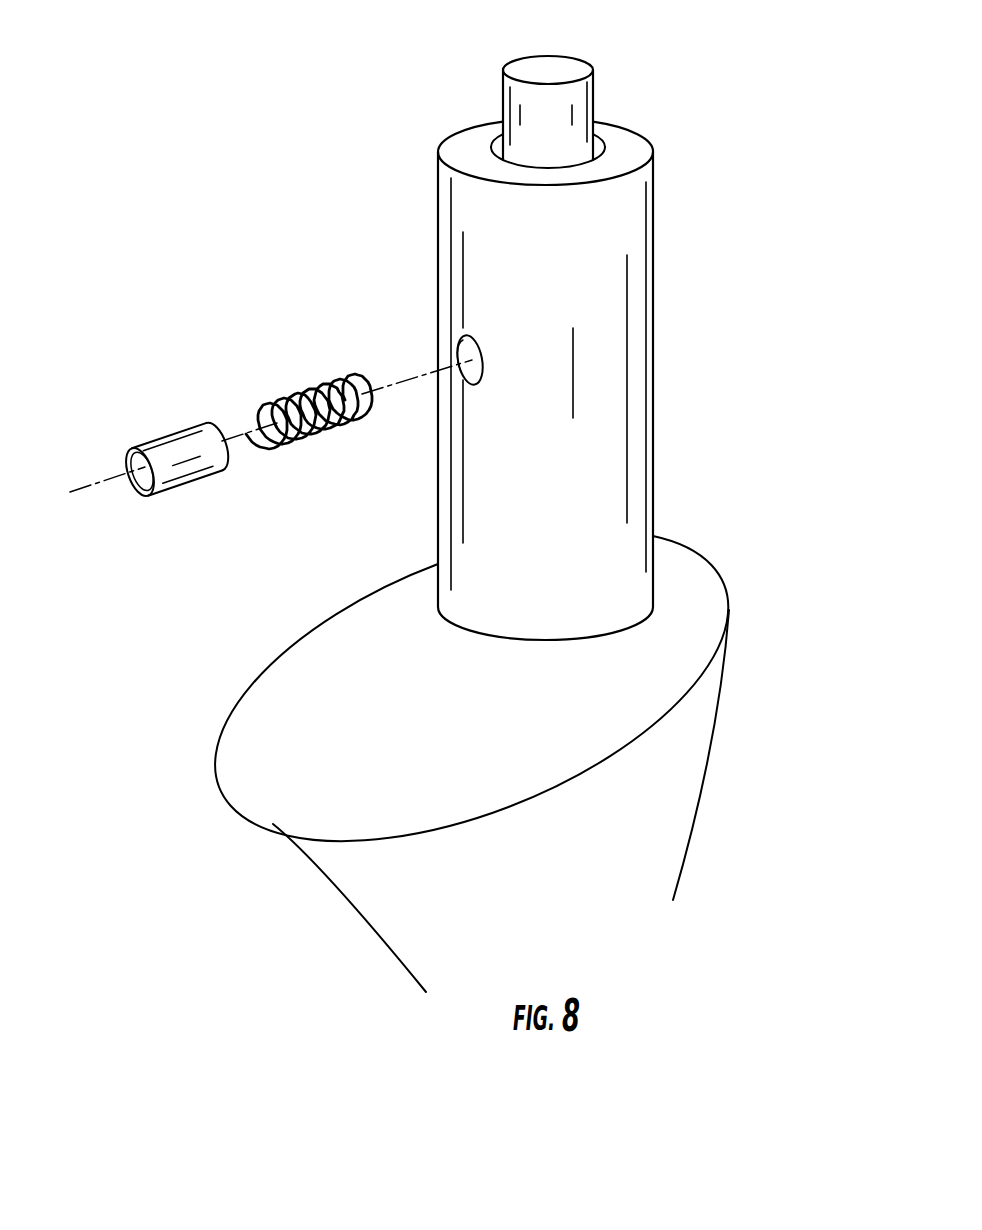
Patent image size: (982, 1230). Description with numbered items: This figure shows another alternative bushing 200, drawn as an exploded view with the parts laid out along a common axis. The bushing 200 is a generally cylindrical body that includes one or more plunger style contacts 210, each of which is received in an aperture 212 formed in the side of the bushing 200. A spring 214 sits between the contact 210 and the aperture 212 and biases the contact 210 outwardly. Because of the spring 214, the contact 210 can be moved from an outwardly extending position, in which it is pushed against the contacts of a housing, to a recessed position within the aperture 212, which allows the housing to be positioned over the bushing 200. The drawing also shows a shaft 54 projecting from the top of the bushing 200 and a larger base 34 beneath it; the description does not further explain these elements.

The housing 34 is at (685, 560).
The shaft 54 is at (570, 98).
The bushing 200 is at (683, 178).
The plunger style contact 210 is at (167, 458).
The aperture 212 is at (458, 348).
The spring 214 is at (303, 393).